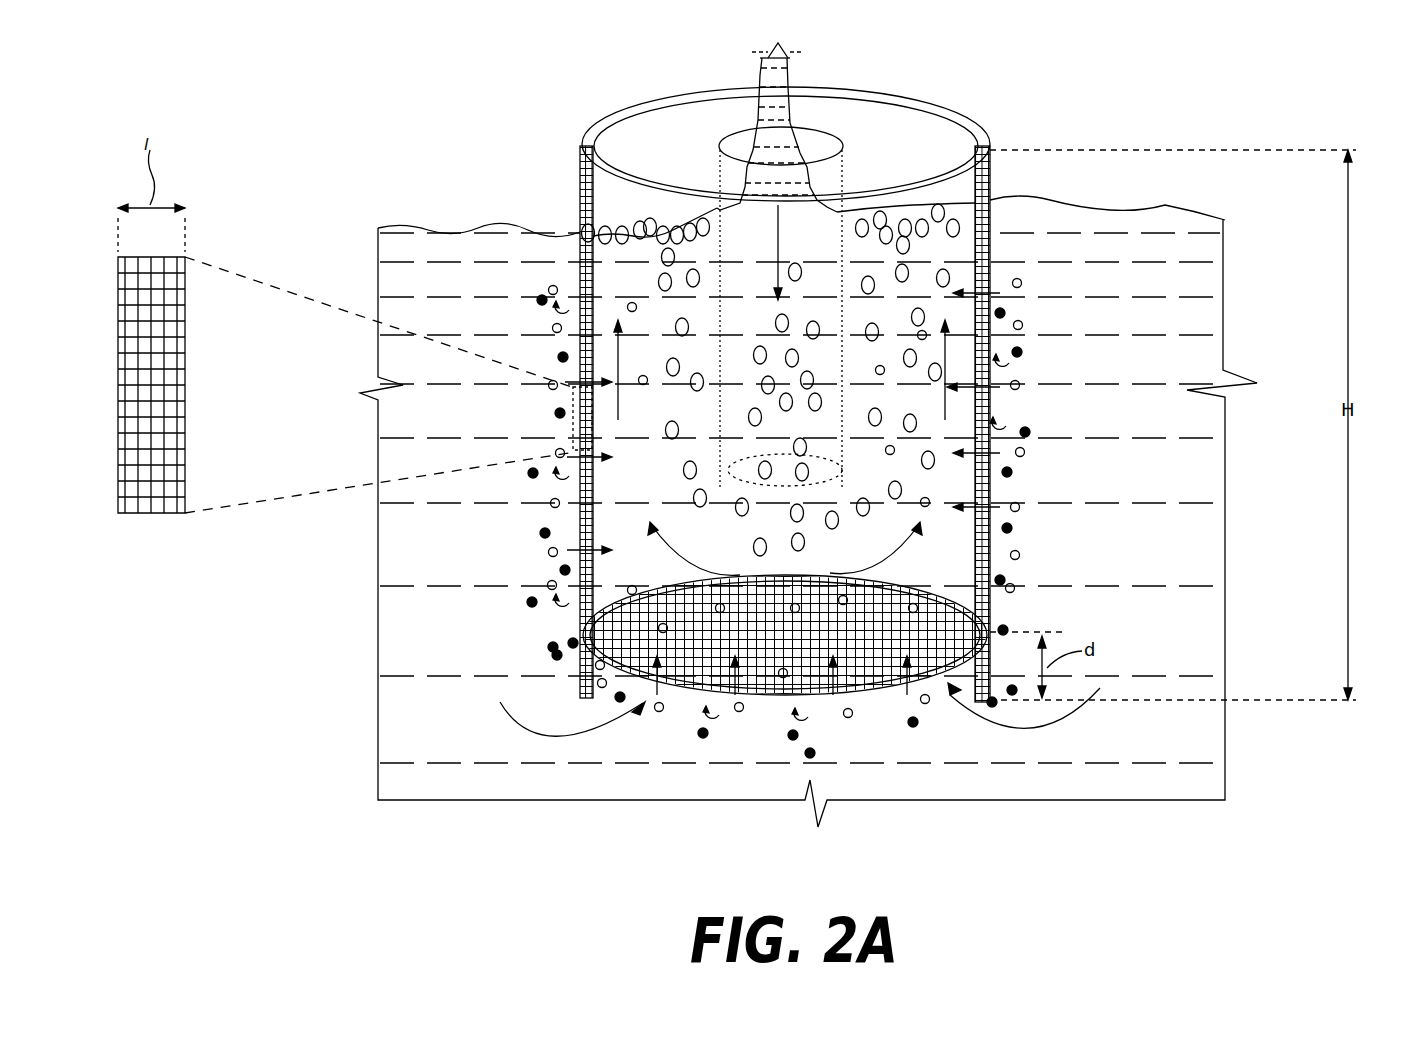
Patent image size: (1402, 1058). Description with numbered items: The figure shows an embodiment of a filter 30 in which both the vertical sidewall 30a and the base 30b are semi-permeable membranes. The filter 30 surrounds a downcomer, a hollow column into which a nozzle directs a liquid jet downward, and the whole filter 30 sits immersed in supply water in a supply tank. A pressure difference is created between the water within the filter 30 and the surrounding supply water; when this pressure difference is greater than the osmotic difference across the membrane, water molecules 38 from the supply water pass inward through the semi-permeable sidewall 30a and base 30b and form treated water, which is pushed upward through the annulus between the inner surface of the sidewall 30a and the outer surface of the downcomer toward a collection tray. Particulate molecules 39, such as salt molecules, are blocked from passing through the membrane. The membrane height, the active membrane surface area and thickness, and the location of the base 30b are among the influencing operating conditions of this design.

The filter 30 is at (607, 203).
The vertical sidewall 30a is at (573, 522).
The base 30b is at (590, 657).
The water molecules 38 is at (925, 702).
The particulate molecules 39 is at (793, 737).